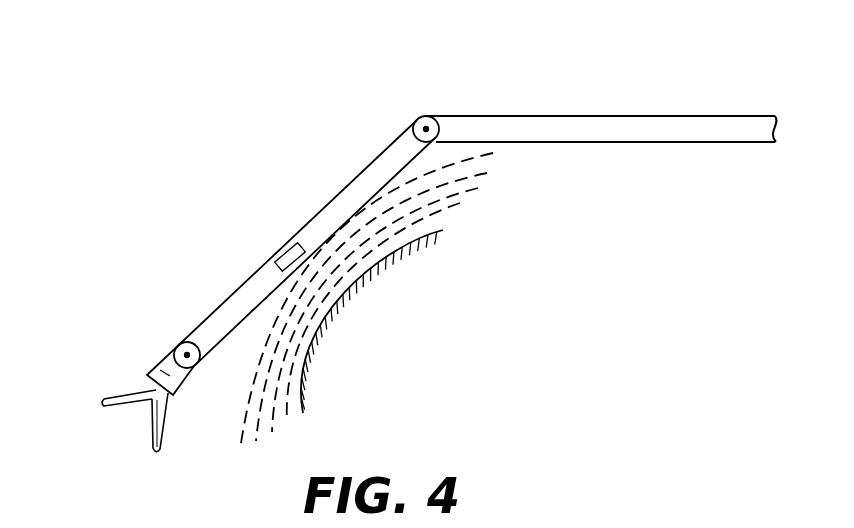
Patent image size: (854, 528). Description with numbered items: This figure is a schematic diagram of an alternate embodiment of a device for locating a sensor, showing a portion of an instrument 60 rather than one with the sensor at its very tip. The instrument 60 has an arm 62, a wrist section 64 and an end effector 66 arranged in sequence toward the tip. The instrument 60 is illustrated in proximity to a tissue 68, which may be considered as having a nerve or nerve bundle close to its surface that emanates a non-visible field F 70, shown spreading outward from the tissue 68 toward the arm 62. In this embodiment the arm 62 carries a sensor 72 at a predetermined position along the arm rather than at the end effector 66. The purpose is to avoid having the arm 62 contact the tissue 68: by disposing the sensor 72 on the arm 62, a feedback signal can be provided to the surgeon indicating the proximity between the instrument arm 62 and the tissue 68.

The instrument 60 is at (399, 136).
The arm 62 is at (331, 220).
The wrist section 64 is at (174, 355).
The end effector 66 is at (112, 393).
The tissue 68 is at (368, 348).
The non-visible field F 70 is at (488, 180).
The sensor 72 is at (276, 258).